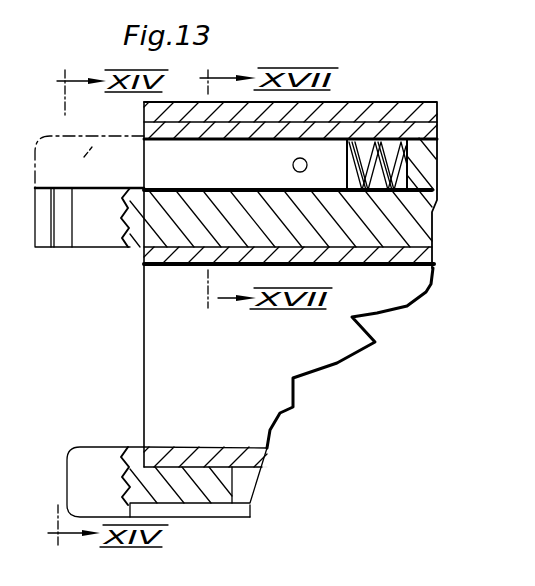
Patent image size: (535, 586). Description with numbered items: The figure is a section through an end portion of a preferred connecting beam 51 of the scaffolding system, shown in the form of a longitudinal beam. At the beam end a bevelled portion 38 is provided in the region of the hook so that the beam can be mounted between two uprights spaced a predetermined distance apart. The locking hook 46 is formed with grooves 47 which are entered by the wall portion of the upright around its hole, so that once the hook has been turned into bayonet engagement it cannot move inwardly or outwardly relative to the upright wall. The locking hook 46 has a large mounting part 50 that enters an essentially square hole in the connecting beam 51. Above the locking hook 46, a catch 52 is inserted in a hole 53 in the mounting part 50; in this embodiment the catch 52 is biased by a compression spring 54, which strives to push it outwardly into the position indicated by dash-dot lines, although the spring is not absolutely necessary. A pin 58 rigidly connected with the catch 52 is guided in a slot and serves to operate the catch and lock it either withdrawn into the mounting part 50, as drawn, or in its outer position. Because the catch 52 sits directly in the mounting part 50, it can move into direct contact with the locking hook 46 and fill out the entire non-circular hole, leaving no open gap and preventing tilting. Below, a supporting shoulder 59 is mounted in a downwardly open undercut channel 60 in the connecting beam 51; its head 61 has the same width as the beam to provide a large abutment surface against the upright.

The bevelled portion 38 is at (143, 342).
The locking hook 46 is at (106, 232).
The grooves 47 is at (63, 237).
The mounting part 50 is at (368, 252).
The connecting beam 51 is at (393, 104).
The catch 52 is at (163, 162).
The hole 53 is at (356, 140).
The compression spring 54 is at (421, 124).
The pin 58 is at (293, 165).
The supporting shoulder 59 is at (84, 438).
The undercut channel 60 is at (246, 480).
The head 61 is at (95, 477).